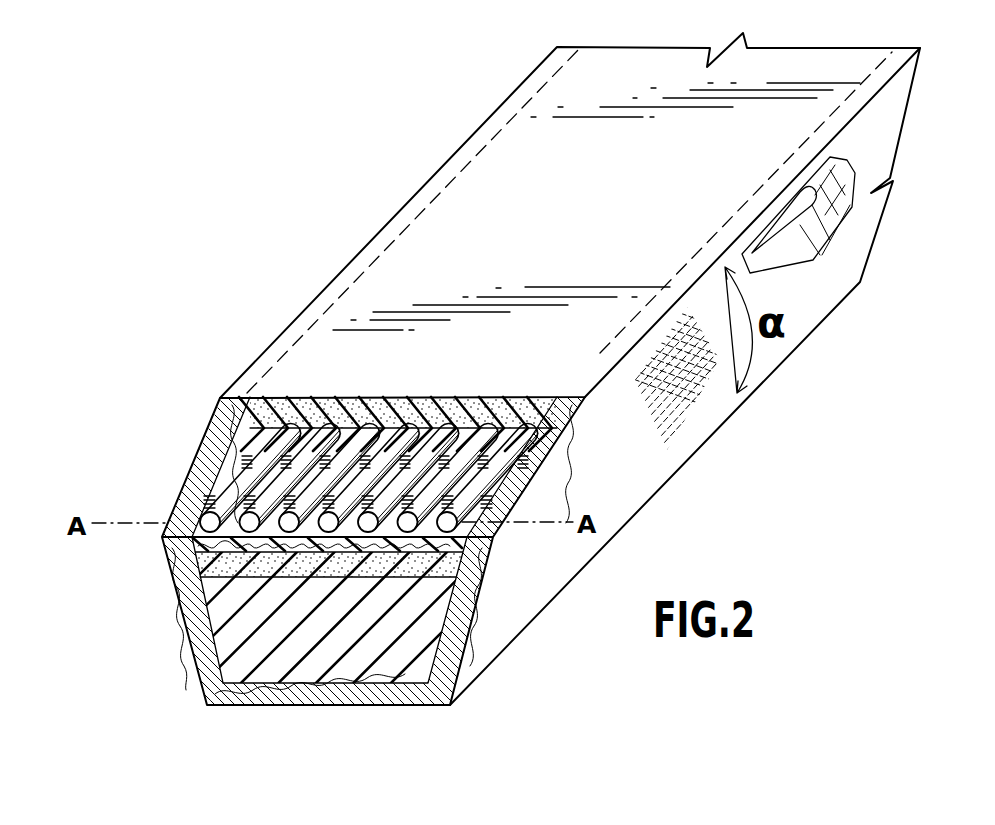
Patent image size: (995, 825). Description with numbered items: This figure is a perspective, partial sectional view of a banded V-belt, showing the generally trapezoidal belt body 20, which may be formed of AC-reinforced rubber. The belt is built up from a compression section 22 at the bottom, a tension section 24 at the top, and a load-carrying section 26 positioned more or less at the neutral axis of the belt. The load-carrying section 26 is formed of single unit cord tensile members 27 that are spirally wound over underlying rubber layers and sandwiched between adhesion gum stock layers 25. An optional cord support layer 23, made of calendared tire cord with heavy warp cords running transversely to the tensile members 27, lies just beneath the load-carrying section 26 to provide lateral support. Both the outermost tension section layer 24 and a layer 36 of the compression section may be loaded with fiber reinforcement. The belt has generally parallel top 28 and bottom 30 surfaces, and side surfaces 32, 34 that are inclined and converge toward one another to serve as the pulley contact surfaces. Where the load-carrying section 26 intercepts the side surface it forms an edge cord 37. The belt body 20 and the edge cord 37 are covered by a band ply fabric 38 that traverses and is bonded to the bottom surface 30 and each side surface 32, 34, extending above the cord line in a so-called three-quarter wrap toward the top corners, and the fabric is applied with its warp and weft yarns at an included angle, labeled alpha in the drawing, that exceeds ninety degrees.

The belt body 20 is at (261, 677).
The compression section 22 is at (395, 663).
The cord support layer 23 is at (178, 558).
The tension section 24 is at (455, 415).
The gum stock layer 25 is at (242, 445).
The load-carrying section 26 is at (568, 432).
The tensile members 27 is at (495, 473).
The top surface 28 is at (590, 226).
The bottom surface 30 is at (340, 678).
The side surface 32 is at (183, 620).
The side surface 34 is at (473, 622).
The compression layer 36 is at (178, 573).
The edge cord 37 is at (792, 213).
The band ply fabric 38 is at (478, 661).